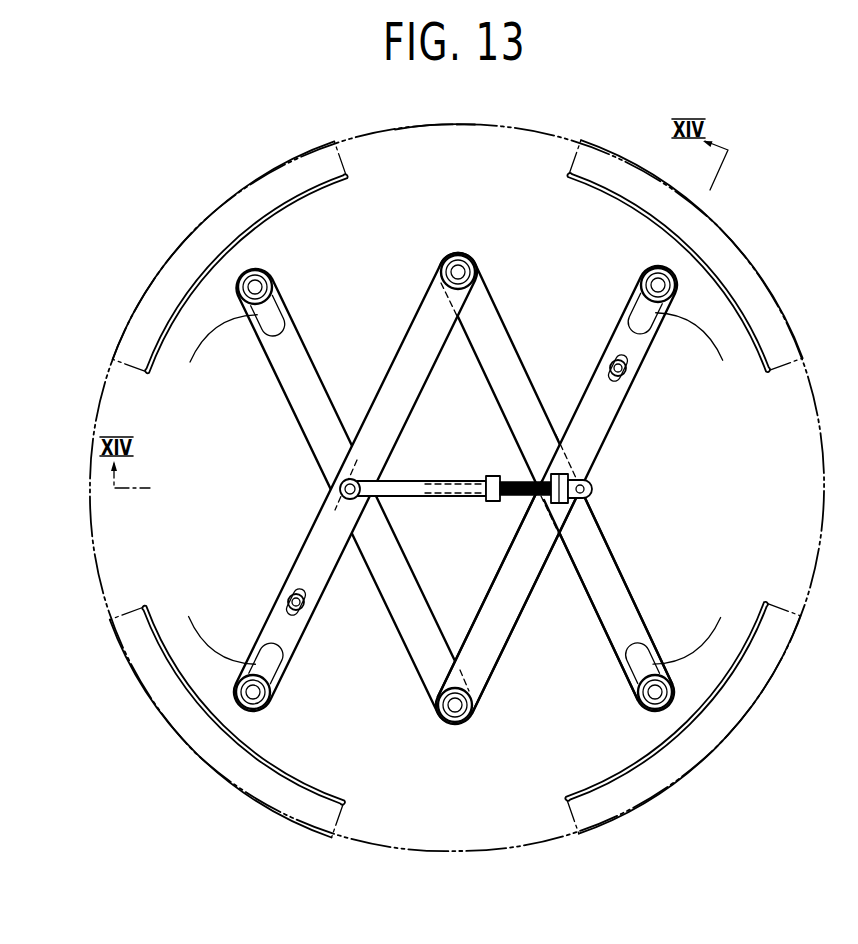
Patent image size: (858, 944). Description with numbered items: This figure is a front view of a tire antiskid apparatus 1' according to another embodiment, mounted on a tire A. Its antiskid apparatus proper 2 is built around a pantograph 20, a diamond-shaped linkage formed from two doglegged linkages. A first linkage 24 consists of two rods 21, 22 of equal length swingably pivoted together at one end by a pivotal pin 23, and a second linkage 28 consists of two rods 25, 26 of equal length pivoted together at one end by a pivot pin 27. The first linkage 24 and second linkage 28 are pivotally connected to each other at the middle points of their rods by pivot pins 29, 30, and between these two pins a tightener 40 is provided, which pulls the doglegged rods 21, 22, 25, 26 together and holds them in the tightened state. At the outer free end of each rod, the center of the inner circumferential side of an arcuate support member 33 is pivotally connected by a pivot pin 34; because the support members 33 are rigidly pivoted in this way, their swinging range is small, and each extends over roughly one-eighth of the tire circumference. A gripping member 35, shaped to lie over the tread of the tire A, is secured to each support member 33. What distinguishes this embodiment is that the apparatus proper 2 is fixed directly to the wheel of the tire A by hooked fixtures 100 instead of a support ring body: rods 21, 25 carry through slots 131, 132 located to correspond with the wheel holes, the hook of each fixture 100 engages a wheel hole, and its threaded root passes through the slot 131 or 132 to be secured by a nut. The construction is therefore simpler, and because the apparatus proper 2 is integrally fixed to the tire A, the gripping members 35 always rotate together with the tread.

The antiskid apparatus 1' is at (457, 459).
The tire A is at (411, 126).
The antiskid apparatus proper 2 is at (456, 468).
The pantograph 20 is at (600, 507).
The rod 21 is at (318, 540).
The rod 22 is at (622, 588).
The pivotal pin 23 is at (458, 262).
The first linkage 24 is at (503, 306).
The rod 25 is at (602, 447).
The rod 26 is at (312, 353).
The pivot pin 27 is at (455, 712).
The second linkage 28 is at (498, 655).
The pivot pin 29 is at (340, 487).
The pivot pin 30 is at (556, 500).
The arcuate support member 33 is at (712, 278).
The pivot pin 34 is at (650, 288).
The gripping member 35 is at (770, 286).
The tightener 40 is at (455, 499).
The fixture 100 is at (288, 598).
The through slot 131 is at (292, 614).
The through slot 132 is at (626, 396).